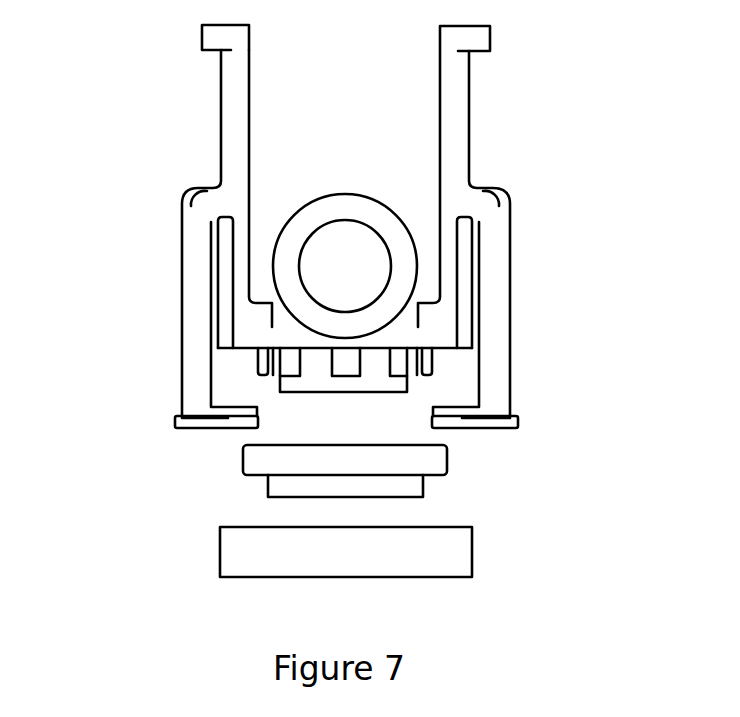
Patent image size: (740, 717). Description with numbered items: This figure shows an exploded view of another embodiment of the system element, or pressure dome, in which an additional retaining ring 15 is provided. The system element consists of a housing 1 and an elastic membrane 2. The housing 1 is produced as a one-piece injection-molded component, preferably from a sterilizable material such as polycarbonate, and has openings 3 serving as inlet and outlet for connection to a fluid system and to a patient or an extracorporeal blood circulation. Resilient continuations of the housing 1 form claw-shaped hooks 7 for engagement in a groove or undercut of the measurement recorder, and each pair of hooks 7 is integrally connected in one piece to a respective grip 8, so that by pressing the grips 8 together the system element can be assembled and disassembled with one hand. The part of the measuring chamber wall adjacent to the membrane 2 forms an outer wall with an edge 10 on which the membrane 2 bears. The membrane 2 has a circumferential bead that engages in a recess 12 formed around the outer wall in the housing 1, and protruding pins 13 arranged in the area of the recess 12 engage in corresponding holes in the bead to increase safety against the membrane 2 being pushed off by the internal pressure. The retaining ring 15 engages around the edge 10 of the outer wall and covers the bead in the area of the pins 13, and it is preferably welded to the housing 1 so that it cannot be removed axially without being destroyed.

The housing 1 is at (181, 218).
The membrane 2 is at (278, 467).
The openings 3 is at (355, 250).
The hooks 7 is at (243, 415).
The grip 8 is at (212, 35).
The edge 10 is at (398, 392).
The recess 12 is at (250, 350).
The pins 13 is at (403, 359).
The retaining ring 15 is at (262, 557).